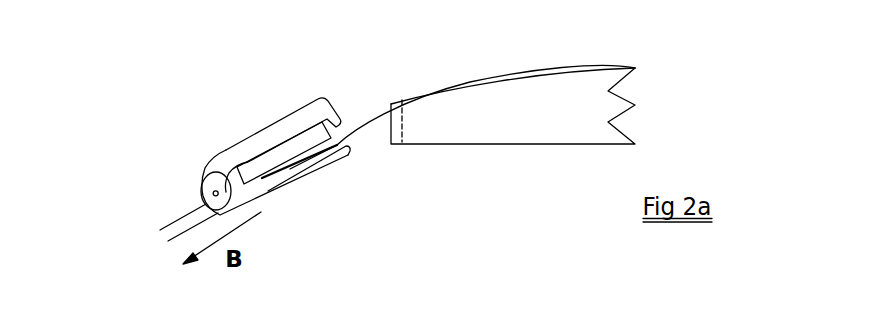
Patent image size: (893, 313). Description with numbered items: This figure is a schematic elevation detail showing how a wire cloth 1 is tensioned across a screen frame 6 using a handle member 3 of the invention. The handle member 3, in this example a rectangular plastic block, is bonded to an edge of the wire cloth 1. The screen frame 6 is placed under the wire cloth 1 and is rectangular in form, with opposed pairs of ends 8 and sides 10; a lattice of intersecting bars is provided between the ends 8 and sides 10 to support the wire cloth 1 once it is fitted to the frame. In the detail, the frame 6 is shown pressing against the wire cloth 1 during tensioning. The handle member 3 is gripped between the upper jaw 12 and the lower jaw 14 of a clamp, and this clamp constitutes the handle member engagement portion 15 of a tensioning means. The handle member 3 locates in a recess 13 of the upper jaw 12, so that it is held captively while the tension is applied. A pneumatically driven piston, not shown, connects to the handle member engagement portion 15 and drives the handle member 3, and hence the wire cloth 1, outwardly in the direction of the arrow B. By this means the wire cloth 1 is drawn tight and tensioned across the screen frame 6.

The wire cloth 1 is at (360, 122).
The handle member 3 is at (245, 170).
The screen frame 6 is at (582, 132).
The end 8 is at (487, 118).
The side 10 is at (402, 142).
The upper jaw 12 is at (279, 129).
The recess 13 is at (204, 178).
The lower jaw 14 is at (306, 172).
The handle member engagement portion 15 is at (217, 113).